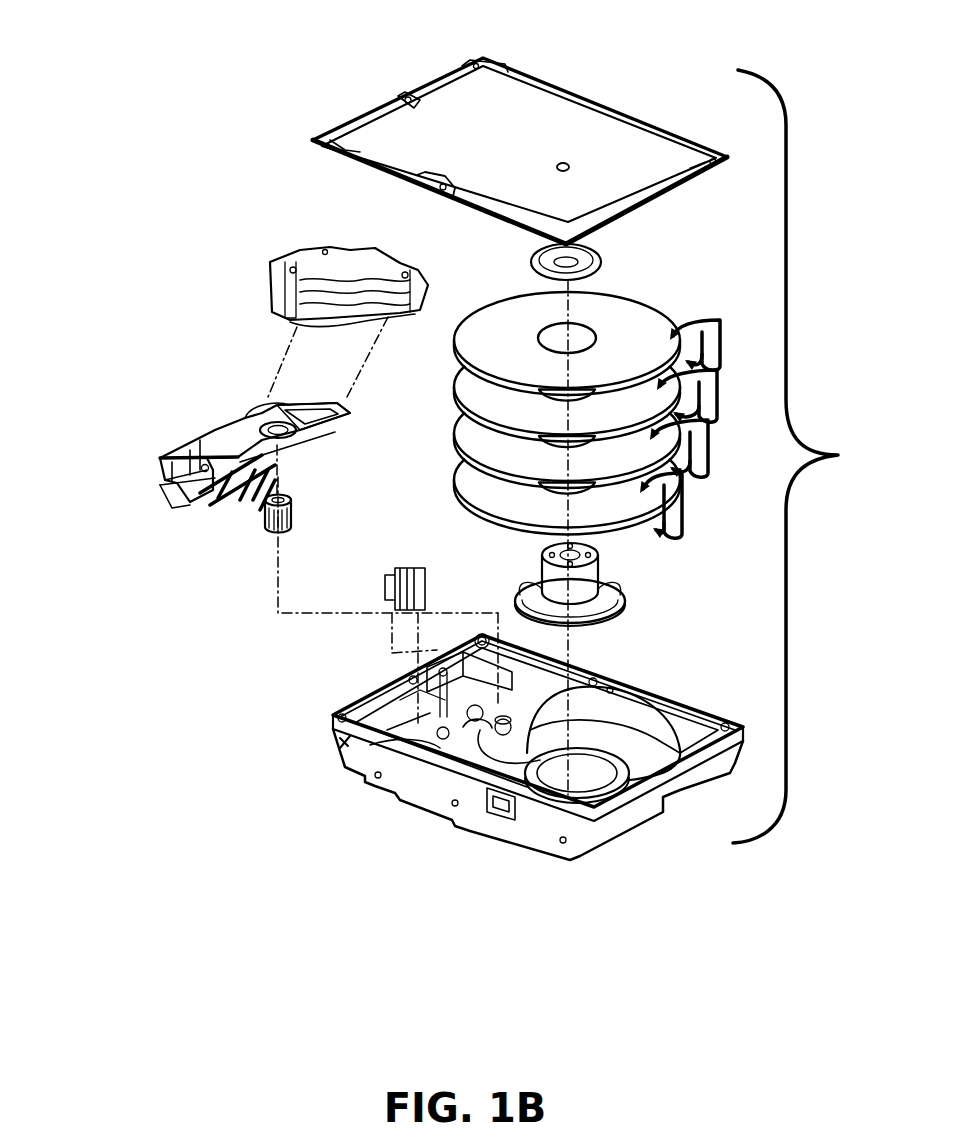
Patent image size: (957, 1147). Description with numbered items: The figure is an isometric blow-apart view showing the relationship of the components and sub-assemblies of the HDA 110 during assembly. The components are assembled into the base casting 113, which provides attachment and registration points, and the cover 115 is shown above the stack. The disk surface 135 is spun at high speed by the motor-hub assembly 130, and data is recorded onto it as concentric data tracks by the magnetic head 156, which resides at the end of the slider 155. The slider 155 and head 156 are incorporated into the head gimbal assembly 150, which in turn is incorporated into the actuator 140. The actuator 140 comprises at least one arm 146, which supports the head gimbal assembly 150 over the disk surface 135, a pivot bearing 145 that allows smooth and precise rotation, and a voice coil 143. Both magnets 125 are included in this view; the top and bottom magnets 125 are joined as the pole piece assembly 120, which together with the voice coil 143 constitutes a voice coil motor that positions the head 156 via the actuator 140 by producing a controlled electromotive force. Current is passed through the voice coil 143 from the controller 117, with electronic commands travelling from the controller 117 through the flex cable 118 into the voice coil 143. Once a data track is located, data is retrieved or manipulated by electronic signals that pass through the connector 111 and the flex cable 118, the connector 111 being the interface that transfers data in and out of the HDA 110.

The HDA 110 is at (850, 435).
The connector 111 is at (170, 487).
The base casting 113 is at (345, 743).
The cover 115 is at (633, 170).
The controller 117 is at (197, 433).
The flex cable 118 is at (255, 420).
The pole piece assembly 120 is at (317, 270).
The magnets 125 is at (297, 323).
The motor-hub assembly 130 is at (580, 583).
The disk surface 135 is at (728, 320).
The actuator 140 is at (266, 414).
The voice coil 143 is at (317, 392).
The pivot bearing 145 is at (266, 527).
The arm 146 is at (260, 510).
The head gimbal assembly 150 is at (253, 500).
The slider 155 is at (240, 500).
The magnetic head 156 is at (218, 498).